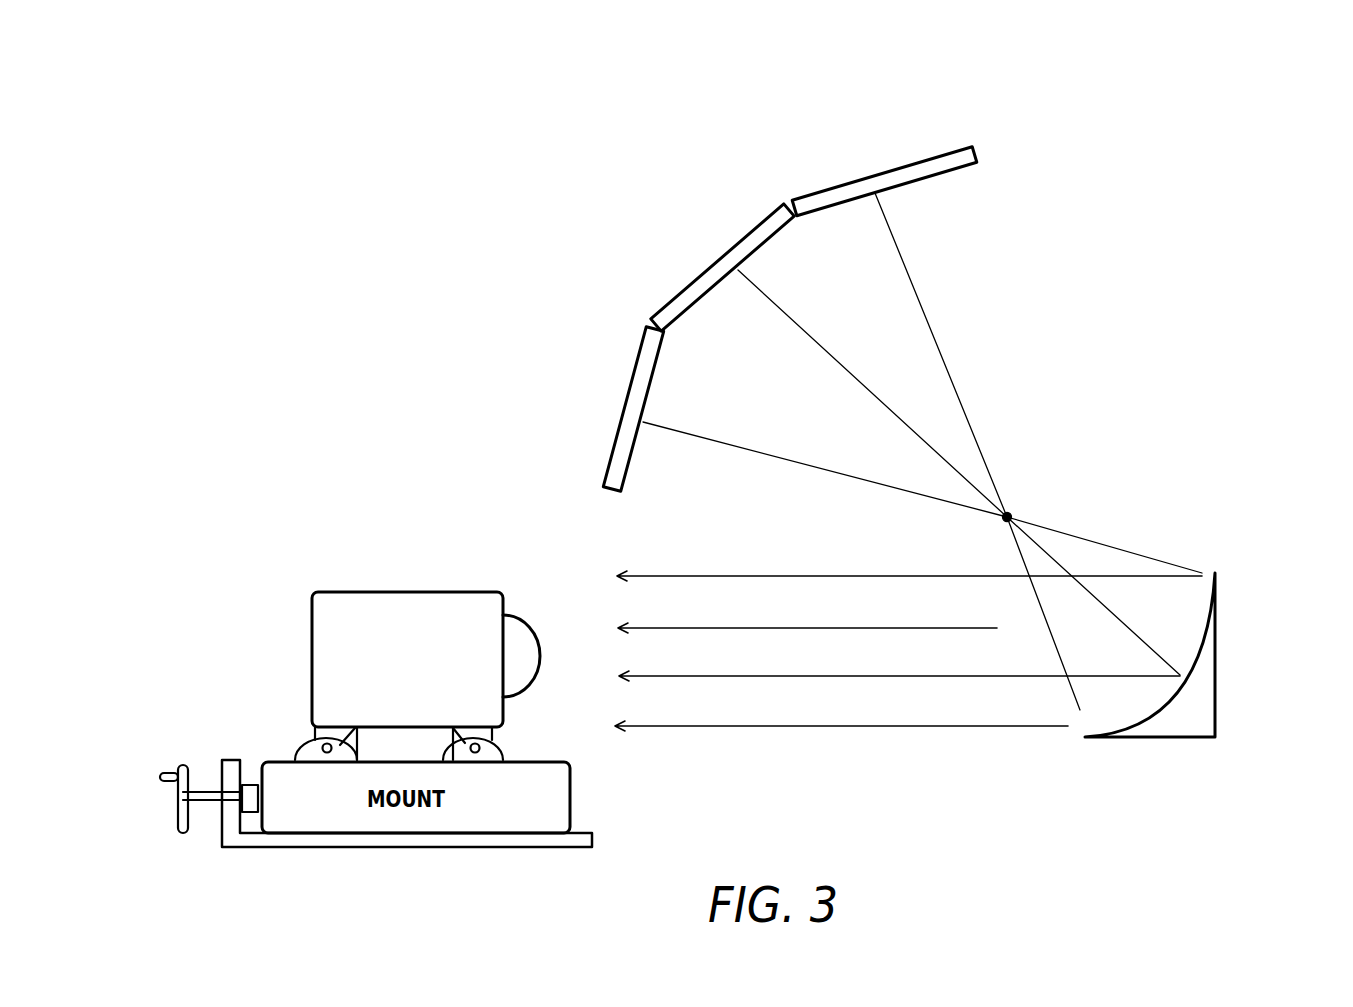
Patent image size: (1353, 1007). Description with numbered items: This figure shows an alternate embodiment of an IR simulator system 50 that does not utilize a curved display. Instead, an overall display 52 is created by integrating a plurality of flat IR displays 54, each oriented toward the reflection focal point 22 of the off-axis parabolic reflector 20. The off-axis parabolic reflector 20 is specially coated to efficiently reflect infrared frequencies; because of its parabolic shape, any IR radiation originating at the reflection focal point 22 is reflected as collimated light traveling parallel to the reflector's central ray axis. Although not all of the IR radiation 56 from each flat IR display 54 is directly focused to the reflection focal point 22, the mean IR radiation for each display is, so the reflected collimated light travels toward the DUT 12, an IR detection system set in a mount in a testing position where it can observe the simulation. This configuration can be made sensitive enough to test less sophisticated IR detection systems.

The DUT 12 is at (365, 590).
The off-axis parabolic reflector 20 is at (1215, 659).
The reflection focal point 22 is at (1010, 513).
The IR simulator system 50 is at (462, 378).
The overall display 52 is at (977, 132).
The flat IR display 54 is at (677, 293).
The IR radiation 56 is at (943, 348).